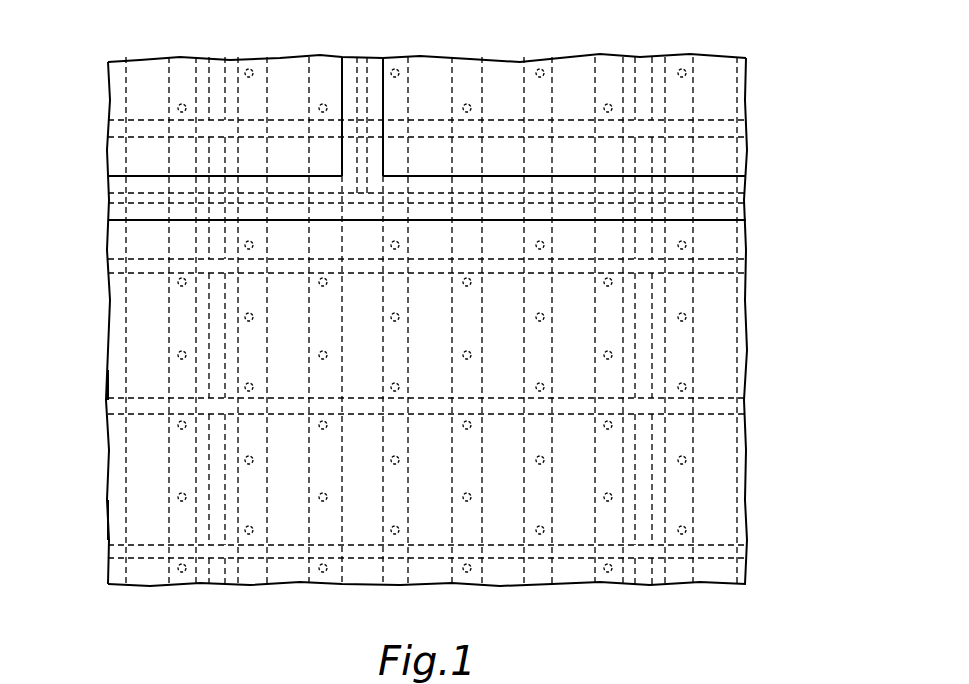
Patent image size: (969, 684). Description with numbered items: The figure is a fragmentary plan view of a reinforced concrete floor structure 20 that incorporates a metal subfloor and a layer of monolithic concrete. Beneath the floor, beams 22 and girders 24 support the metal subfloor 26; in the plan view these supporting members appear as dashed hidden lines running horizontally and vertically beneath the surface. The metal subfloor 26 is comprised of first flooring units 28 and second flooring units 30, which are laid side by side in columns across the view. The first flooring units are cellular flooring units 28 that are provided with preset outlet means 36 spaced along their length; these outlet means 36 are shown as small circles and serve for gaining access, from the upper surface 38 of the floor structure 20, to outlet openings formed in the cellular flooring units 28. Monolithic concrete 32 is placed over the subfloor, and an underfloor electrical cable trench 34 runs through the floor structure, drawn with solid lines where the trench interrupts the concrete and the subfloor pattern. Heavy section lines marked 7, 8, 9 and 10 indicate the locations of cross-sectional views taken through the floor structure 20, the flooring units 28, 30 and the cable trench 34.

The reinforced concrete floor structure 20 is at (460, 327).
The beams 22 is at (743, 128).
The girders 24 is at (225, 590).
The metal subfloor 26 is at (97, 388).
The first flooring units 28 is at (674, 48).
The second flooring units 30 is at (505, 72).
The monolithic concrete 32 is at (100, 517).
The underfloor electrical cable trench 34 is at (377, 48).
The preset outlet means 36 is at (330, 450).
The upper surface 38 is at (726, 481).
The section line 7- 7 is at (495, 582).
The section line 8- 8 is at (402, 582).
The section line 9- 9 is at (568, 302).
The section line 10- 10 is at (263, 345).